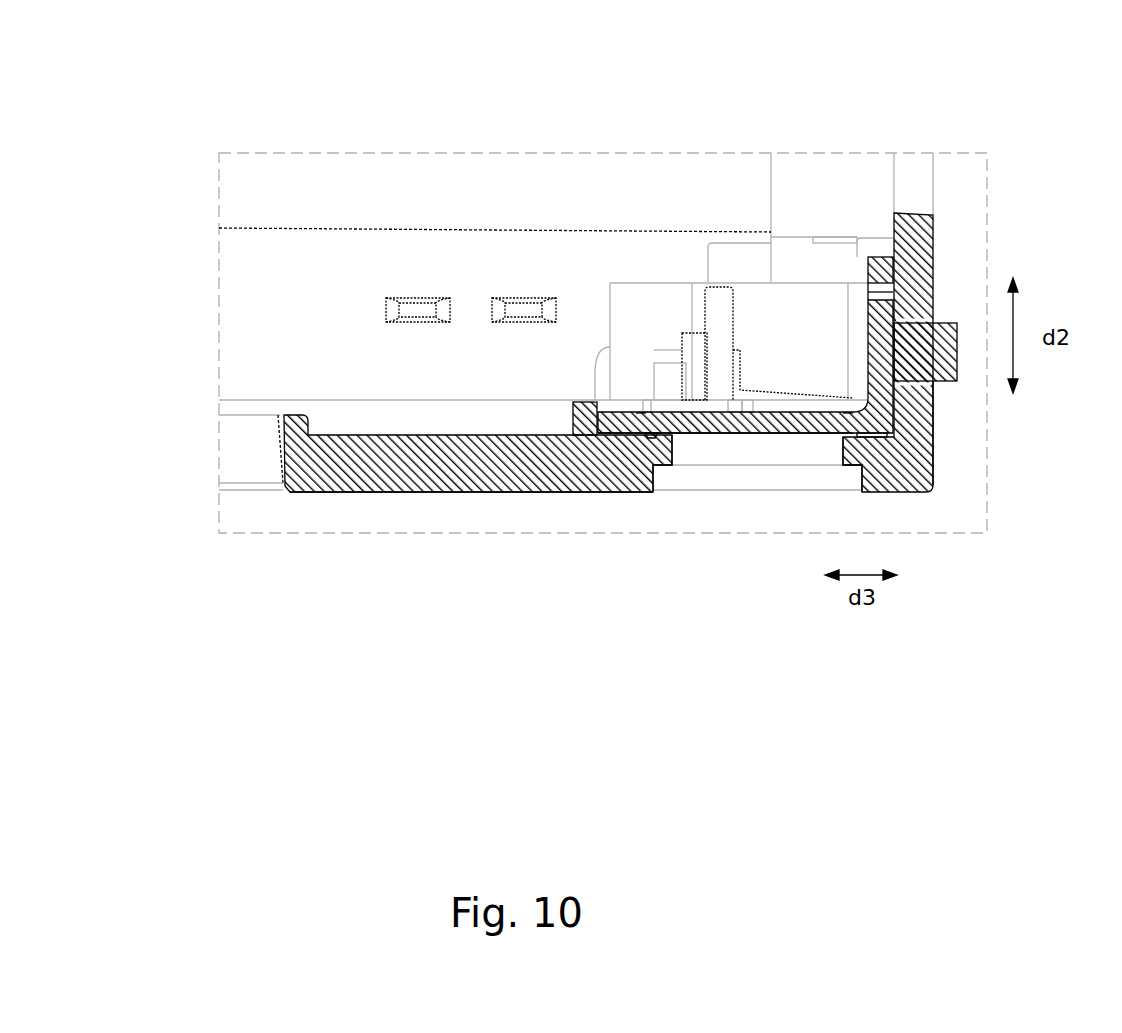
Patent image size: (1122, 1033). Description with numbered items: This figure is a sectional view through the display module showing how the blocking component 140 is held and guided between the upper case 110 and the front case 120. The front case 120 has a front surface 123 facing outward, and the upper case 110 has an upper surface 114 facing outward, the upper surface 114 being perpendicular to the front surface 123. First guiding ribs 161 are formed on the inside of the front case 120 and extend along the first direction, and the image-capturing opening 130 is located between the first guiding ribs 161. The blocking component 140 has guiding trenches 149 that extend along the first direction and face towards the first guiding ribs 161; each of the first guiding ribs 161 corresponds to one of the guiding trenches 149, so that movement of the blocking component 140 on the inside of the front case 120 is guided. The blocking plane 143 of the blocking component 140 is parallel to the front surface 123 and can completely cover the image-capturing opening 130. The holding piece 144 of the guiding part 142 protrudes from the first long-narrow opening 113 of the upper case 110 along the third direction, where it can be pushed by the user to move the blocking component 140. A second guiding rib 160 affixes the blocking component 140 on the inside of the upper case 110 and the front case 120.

The upper case 110 is at (922, 215).
The first long-narrow opening 113 is at (938, 392).
The upper surface 114 is at (935, 422).
The front case 120 is at (288, 462).
The front surface 123 is at (553, 492).
The image-capturing opening 130 is at (653, 472).
The blocking component 140 is at (875, 257).
The guiding part 142 is at (945, 323).
The blocking plane 143 is at (806, 436).
The holding piece 144 is at (974, 279).
The guiding trenches 149 is at (640, 417).
The second guiding rib 160 is at (580, 400).
The first guiding ribs 161 is at (672, 438).